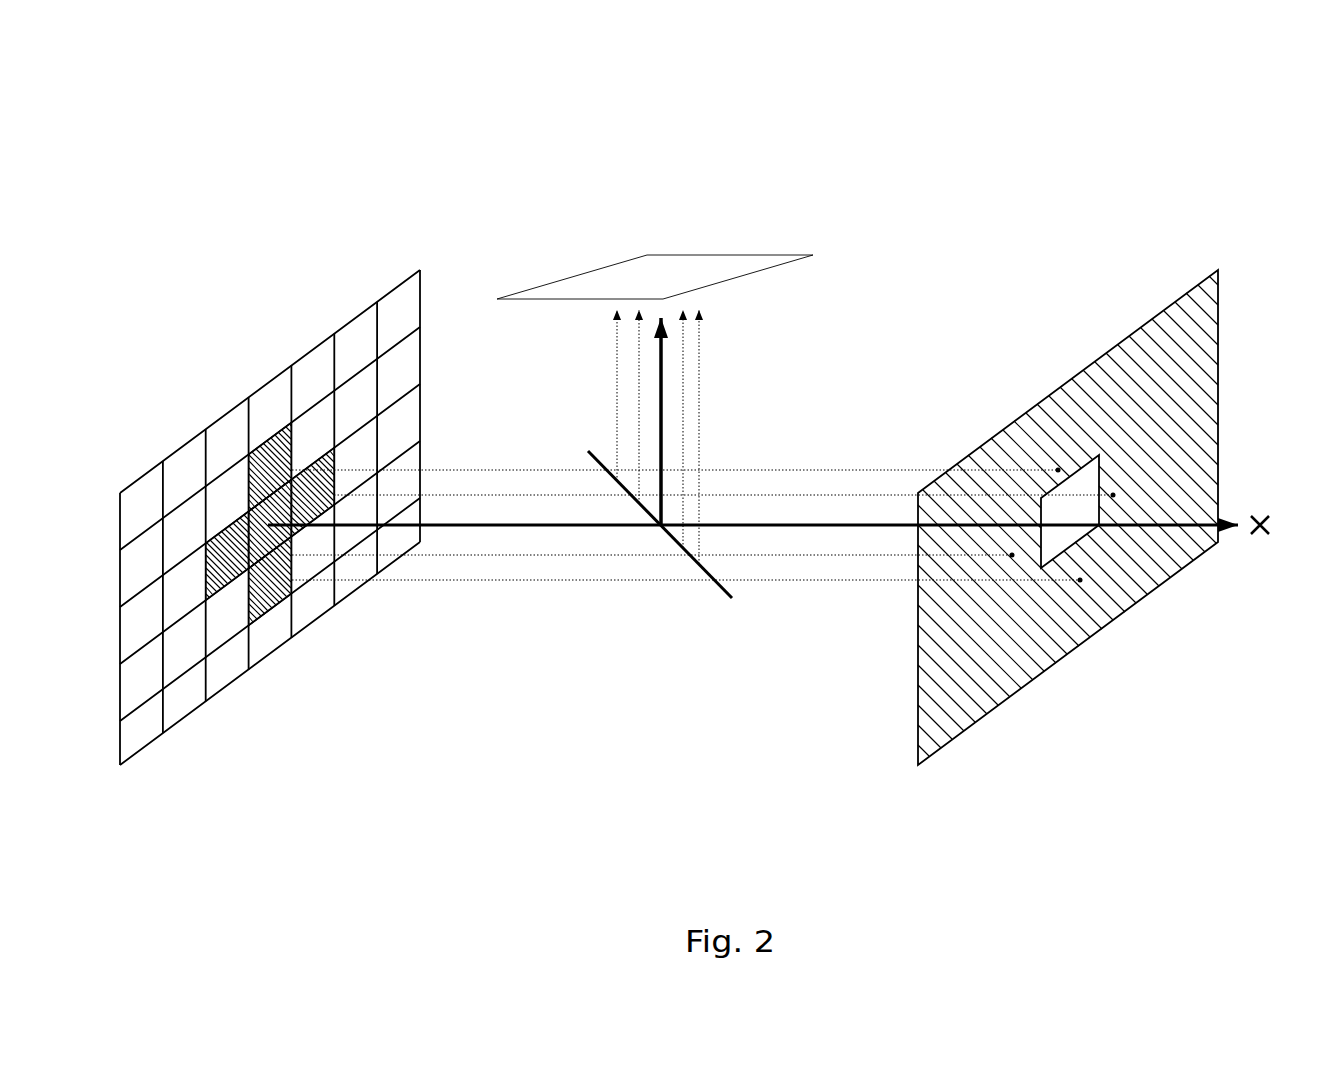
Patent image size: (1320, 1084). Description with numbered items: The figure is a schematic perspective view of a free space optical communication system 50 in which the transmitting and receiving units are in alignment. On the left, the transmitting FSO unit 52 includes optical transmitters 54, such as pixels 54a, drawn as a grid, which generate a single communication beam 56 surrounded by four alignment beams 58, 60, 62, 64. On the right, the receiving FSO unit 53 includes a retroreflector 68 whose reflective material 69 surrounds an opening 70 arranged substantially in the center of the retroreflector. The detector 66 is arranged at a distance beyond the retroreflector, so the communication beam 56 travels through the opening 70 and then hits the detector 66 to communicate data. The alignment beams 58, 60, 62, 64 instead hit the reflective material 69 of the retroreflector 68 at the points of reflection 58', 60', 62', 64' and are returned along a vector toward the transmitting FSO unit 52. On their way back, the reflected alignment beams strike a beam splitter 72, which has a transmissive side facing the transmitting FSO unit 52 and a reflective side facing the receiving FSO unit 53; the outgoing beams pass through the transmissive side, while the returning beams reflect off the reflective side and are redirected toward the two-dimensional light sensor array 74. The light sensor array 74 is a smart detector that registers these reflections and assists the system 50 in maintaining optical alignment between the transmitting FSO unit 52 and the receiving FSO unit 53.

The FSO communication system 50 is at (915, 145).
The transmitting FSO unit 52 is at (283, 235).
The receiving FSO unit 53 is at (1080, 235).
The optical transmitters 54 is at (357, 327).
The pixels 54a is at (408, 304).
The communication beam 56 is at (268, 527).
The alignment beam 58 is at (234, 424).
The alignment beam 60 is at (197, 487).
The alignment beam 62 is at (283, 433).
The alignment beam 64 is at (273, 618).
The detector 66 is at (1264, 532).
The retroreflector 68 is at (1172, 306).
The reflective material 69 is at (1165, 379).
The opening 70 is at (1084, 515).
The beam splitter 72 is at (688, 558).
The two-dimensional light sensor array 74 is at (659, 289).
The point of reflection 58' is at (1014, 404).
The point of reflection 60' is at (974, 466).
The point of reflection 62' is at (1074, 414).
The point of reflection 64' is at (1090, 639).